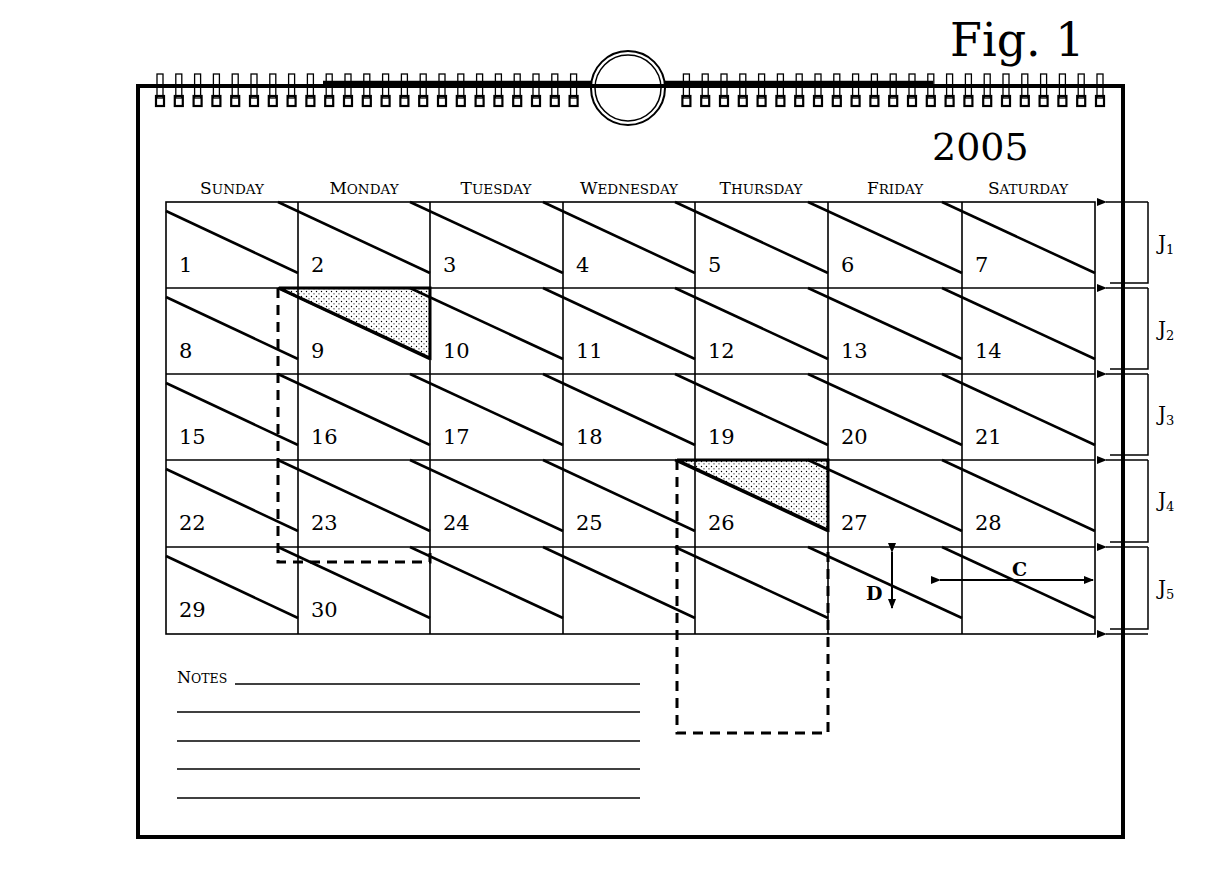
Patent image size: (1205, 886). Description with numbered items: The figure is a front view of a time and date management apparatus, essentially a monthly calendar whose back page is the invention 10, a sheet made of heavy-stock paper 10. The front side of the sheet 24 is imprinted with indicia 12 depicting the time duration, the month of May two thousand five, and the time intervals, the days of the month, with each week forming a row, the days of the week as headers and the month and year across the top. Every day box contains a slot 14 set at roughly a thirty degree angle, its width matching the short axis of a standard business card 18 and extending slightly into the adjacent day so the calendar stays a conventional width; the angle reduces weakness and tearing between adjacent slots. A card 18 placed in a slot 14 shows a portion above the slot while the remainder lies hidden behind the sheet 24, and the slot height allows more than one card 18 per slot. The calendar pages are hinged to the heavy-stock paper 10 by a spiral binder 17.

The heavy-stock paper 10 is at (1137, 161).
The indicia 12 is at (326, 148).
The slot 14 is at (353, 236).
The spiral binder 17 is at (833, 80).
The business card 18 is at (433, 300).
The sheet 24 is at (1112, 708).